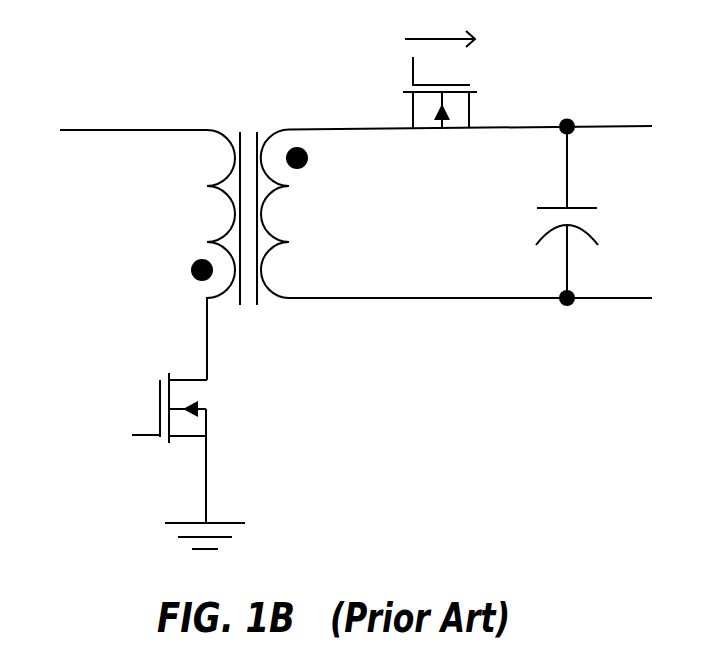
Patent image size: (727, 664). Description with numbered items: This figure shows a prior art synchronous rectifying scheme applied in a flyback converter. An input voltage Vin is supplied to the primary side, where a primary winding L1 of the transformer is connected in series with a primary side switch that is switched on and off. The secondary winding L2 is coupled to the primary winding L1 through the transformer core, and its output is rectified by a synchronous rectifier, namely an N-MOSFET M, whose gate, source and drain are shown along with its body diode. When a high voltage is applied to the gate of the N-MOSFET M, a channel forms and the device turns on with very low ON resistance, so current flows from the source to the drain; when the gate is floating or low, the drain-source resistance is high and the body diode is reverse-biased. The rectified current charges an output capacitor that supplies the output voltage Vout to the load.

The transformer primary winding L1 is at (198, 255).
The transformer secondary winding L2 is at (456, 214).
The N-MOSFET synchronous rectifier M is at (453, 89).
The input voltage Vin is at (127, 168).
The output voltage Vout is at (608, 213).